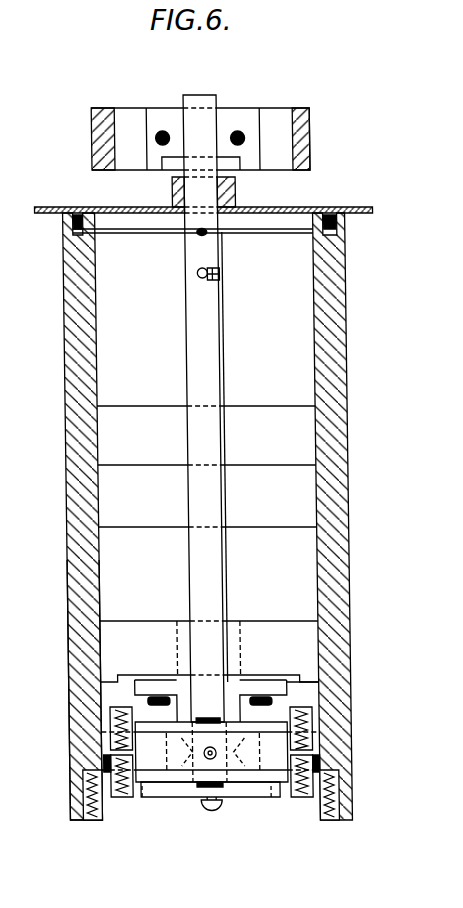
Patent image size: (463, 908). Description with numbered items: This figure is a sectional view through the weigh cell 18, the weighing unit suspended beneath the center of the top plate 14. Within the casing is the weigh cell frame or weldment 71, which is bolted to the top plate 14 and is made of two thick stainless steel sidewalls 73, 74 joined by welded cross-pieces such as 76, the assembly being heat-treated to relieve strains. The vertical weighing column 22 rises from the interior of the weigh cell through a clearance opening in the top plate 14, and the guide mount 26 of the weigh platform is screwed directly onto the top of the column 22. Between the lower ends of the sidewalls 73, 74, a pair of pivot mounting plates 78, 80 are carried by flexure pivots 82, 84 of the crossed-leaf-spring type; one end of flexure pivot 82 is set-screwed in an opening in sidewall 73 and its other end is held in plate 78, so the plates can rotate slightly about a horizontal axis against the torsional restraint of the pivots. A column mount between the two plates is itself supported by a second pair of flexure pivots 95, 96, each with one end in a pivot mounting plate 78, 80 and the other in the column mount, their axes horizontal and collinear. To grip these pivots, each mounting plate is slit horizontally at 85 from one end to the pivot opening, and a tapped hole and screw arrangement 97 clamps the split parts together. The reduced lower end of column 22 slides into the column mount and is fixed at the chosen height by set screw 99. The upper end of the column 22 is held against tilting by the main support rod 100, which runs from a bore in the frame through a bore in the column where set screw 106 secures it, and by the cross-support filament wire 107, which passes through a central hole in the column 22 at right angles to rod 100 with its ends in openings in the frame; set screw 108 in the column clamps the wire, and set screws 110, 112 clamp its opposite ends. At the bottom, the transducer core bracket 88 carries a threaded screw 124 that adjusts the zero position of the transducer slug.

The top plate 14 is at (348, 205).
The weigh cell 18 is at (198, 516).
The vertical weighing column 22 is at (194, 332).
The guide mount 26 is at (287, 120).
The weigh cell frame 71 is at (70, 531).
The sidewall 73 is at (67, 589).
The sidewall 74 is at (338, 583).
The cross-piece 76 is at (173, 398).
The pivot mounting plate 78 is at (104, 713).
The pivot mounting plate 80 is at (309, 713).
The flexure pivot 82 is at (102, 730).
The flexure pivot 84 is at (318, 732).
The horizontal slit 85 is at (105, 752).
The transducer core bracket 88 is at (175, 793).
The flexure pivot 95 is at (138, 797).
The flexure pivot 96 is at (265, 793).
The tapped hole and screw arrangement 97 is at (103, 800).
The set screw 99 is at (206, 747).
The main support rod 100 is at (200, 274).
The set screw 106 is at (216, 281).
The cross-support filament wire 107 is at (162, 238).
The set screw 108 is at (212, 236).
The set screw 110 is at (75, 222).
The set screw 112 is at (340, 222).
The screw 124 is at (211, 808).